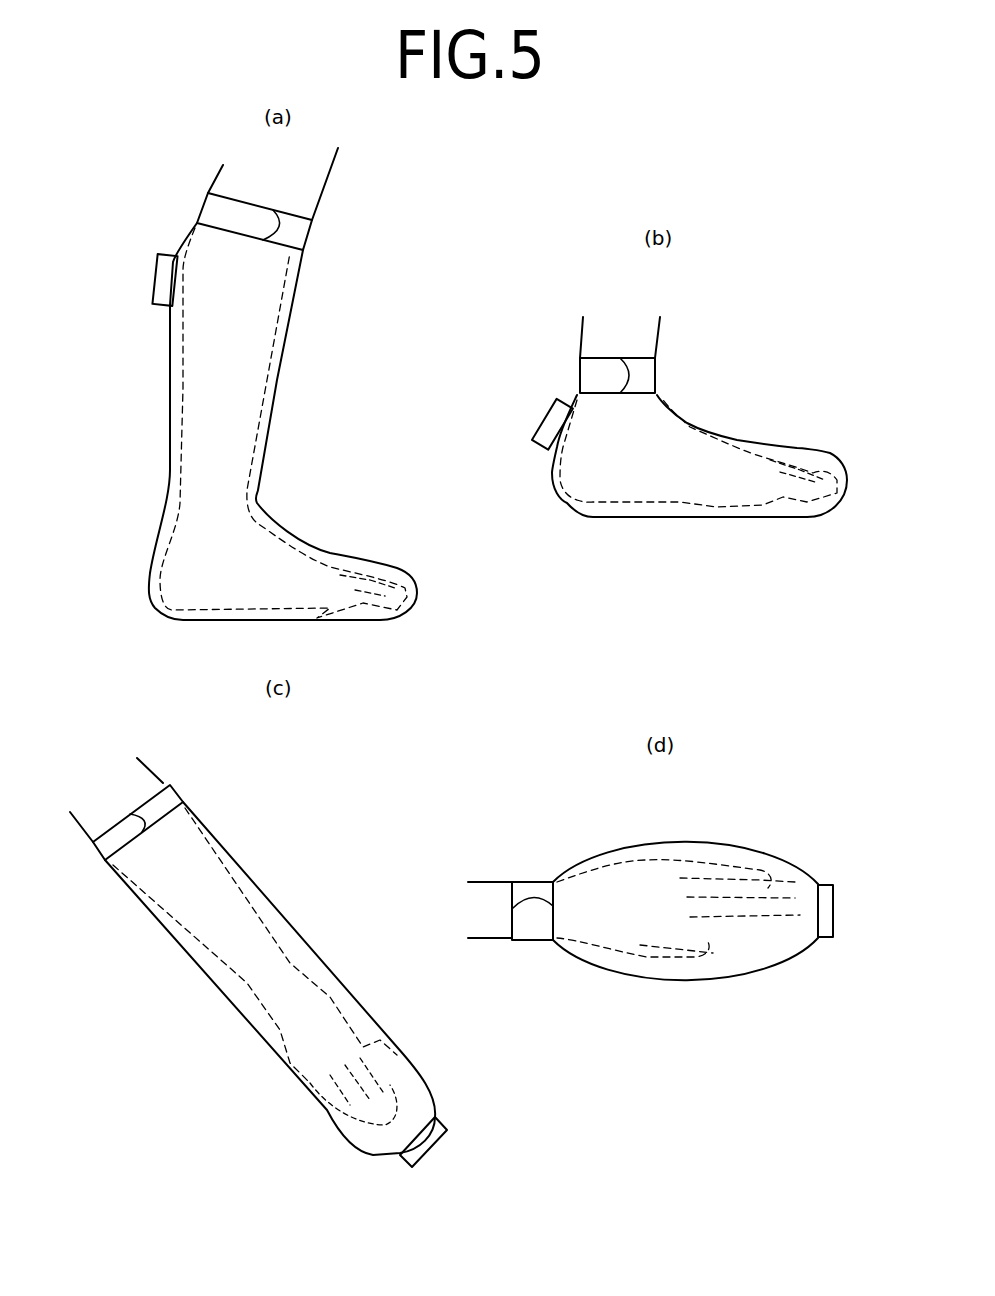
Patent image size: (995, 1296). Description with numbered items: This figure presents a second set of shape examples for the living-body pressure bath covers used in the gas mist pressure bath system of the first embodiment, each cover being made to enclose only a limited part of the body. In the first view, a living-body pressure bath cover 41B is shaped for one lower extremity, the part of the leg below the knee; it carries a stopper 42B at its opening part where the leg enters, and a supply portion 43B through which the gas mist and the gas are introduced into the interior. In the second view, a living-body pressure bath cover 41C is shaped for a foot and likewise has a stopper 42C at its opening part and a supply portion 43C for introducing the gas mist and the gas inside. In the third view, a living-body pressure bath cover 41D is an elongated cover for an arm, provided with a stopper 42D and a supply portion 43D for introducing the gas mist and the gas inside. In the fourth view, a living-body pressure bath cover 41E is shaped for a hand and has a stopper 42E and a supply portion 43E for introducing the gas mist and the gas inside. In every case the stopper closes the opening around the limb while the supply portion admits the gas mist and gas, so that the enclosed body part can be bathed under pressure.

The living-body pressure bath cover 41B is at (252, 382).
The stopper 42B is at (310, 233).
The supply portion 43B is at (157, 275).
The living-body pressure bath cover 41C is at (655, 399).
The stopper 42C is at (578, 367).
The supply portion 43C is at (545, 423).
The living-body pressure bath cover 41D is at (294, 950).
The stopper 42D is at (173, 792).
The supply portion 43D is at (437, 1118).
The living-body pressure bath cover 41E is at (656, 896).
The stopper 42E is at (525, 882).
The supply portion 43E is at (825, 940).